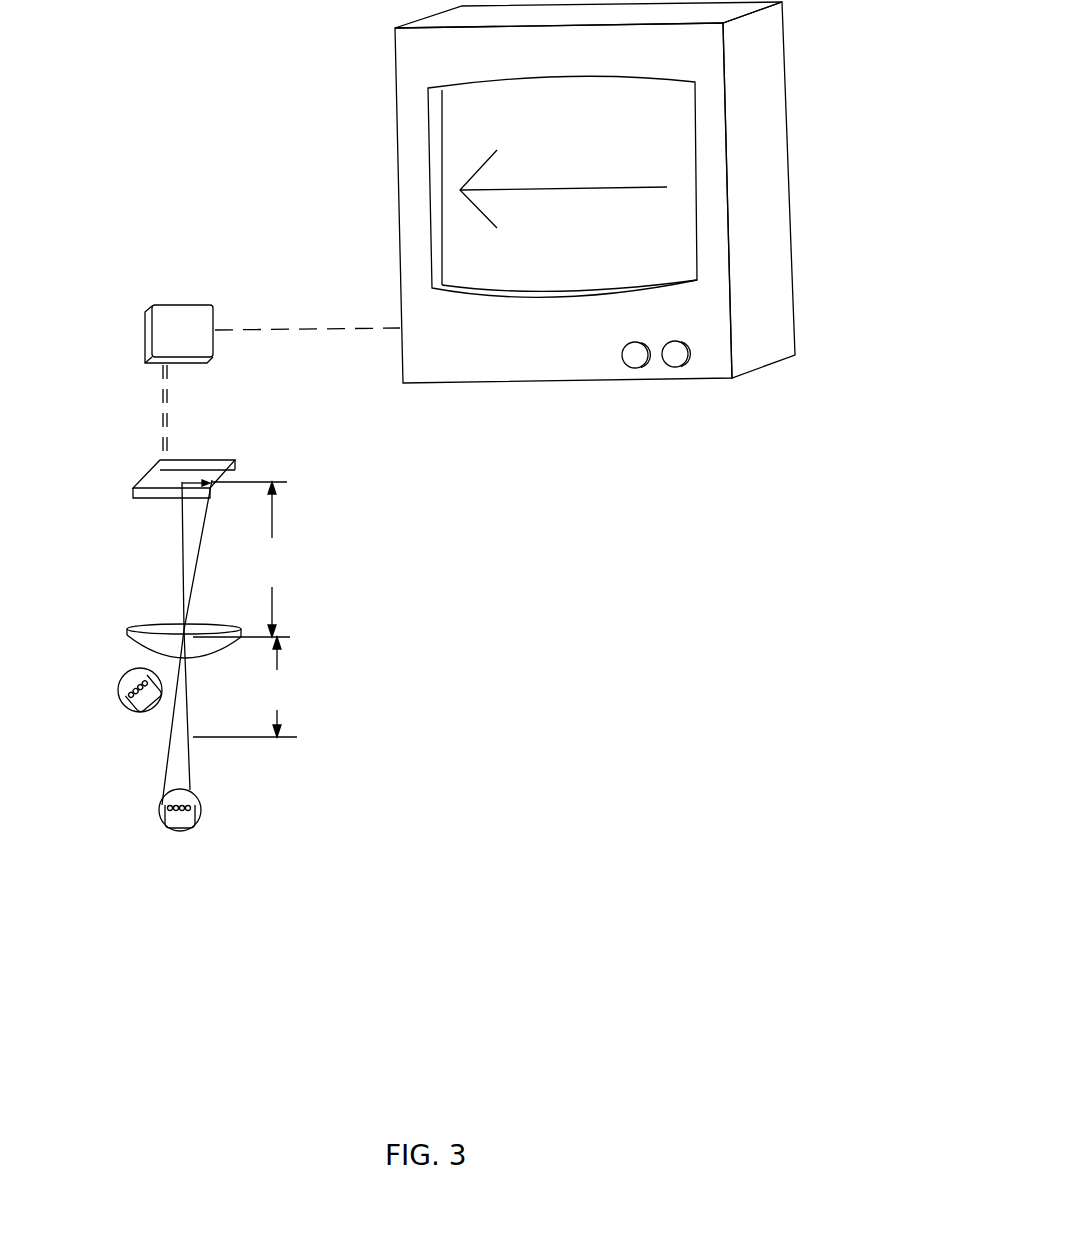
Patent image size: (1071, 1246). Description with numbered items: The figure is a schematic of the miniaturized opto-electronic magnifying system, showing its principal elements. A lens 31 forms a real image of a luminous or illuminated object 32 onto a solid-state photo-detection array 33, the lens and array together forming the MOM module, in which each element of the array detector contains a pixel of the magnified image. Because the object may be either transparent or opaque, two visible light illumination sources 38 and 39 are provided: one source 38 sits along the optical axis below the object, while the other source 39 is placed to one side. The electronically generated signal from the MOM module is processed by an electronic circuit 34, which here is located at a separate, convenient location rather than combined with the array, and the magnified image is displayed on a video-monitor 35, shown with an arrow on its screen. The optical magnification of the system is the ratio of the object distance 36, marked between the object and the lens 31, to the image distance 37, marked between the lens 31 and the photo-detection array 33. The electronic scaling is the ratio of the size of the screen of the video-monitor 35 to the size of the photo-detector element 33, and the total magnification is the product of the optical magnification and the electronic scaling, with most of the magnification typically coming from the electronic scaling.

The lens 31 is at (120, 630).
The object 32 is at (177, 737).
The solid-state photo-detection array 33 is at (138, 473).
The electronic circuit 34 is at (140, 340).
The video-monitor 35 is at (397, 225).
The object distance 36 is at (245, 687).
The image distance 37 is at (241, 559).
The visible light illumination source 38 is at (207, 817).
The visible light illumination source 39 is at (112, 700).